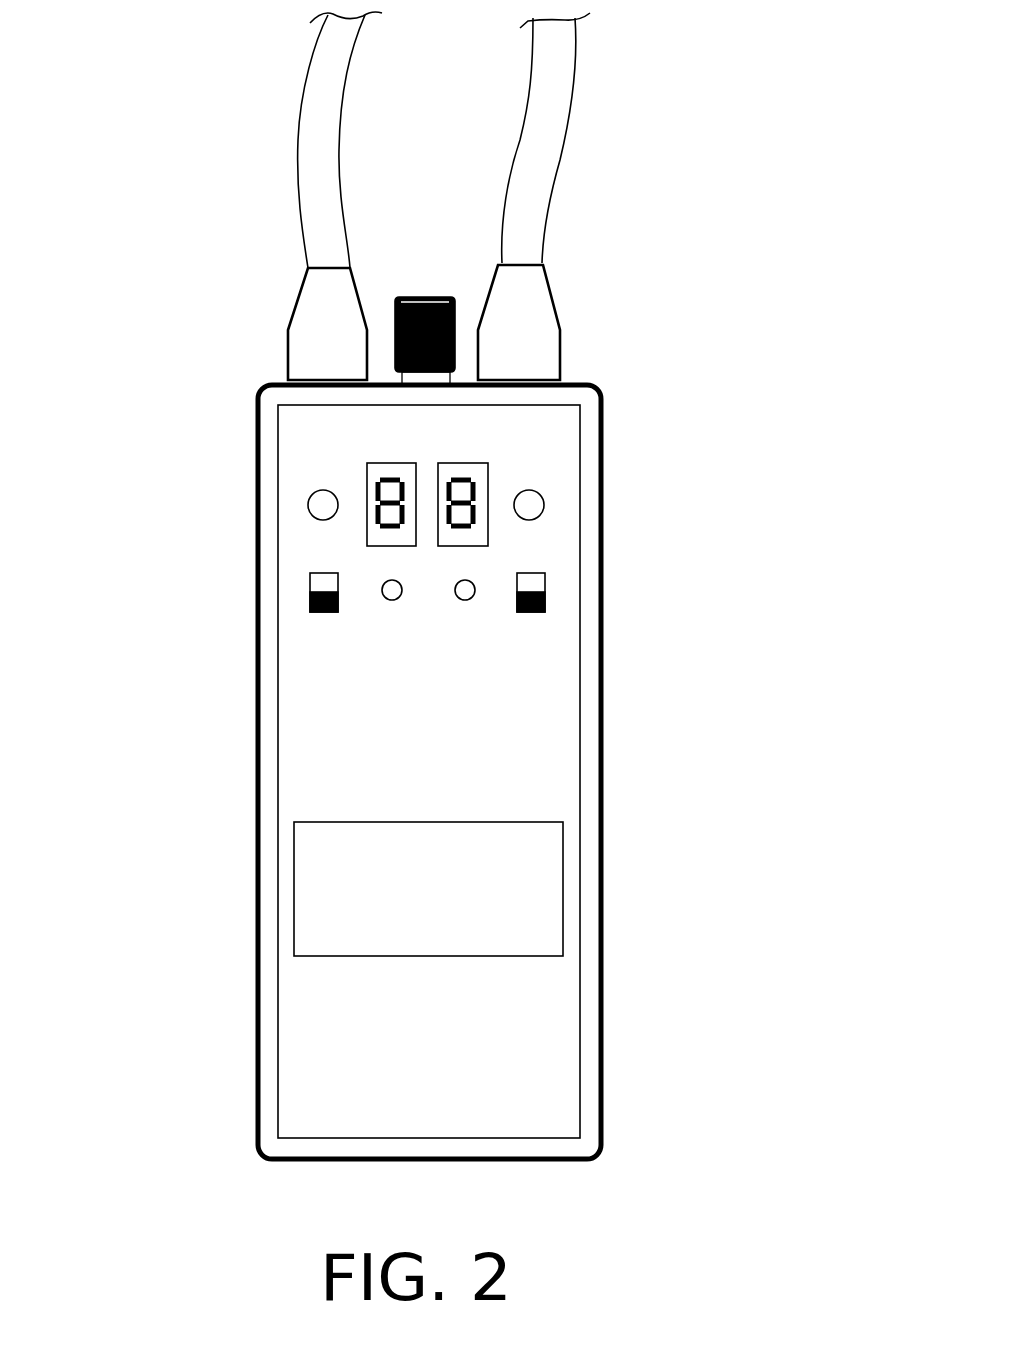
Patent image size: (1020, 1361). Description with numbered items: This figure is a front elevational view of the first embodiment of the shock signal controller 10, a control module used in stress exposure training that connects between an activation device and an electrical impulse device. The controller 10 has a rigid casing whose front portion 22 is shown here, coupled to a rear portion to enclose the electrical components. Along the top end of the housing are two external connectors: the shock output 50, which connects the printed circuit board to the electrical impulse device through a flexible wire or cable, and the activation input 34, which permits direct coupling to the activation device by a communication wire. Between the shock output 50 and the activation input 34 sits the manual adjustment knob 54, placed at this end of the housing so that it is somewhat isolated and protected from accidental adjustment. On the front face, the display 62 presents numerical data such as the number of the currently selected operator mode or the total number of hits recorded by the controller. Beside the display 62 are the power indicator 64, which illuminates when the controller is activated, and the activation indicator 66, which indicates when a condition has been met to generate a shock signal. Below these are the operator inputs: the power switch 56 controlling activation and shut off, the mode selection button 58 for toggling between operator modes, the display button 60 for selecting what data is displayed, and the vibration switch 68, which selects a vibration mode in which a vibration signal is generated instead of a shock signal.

The shock signal controller 10 is at (714, 116).
The front portion 22 is at (463, 700).
The activation input 34 is at (599, 268).
The shock output 50 is at (266, 290).
The manual adjustment knob 54 is at (427, 297).
The power switch 56 is at (527, 577).
The mode selection button 58 is at (465, 590).
The display button 60 is at (392, 590).
The display 62 is at (478, 535).
The power indicator 64 is at (531, 503).
The activation indicator 66 is at (321, 503).
The vibration switch 68 is at (328, 579).